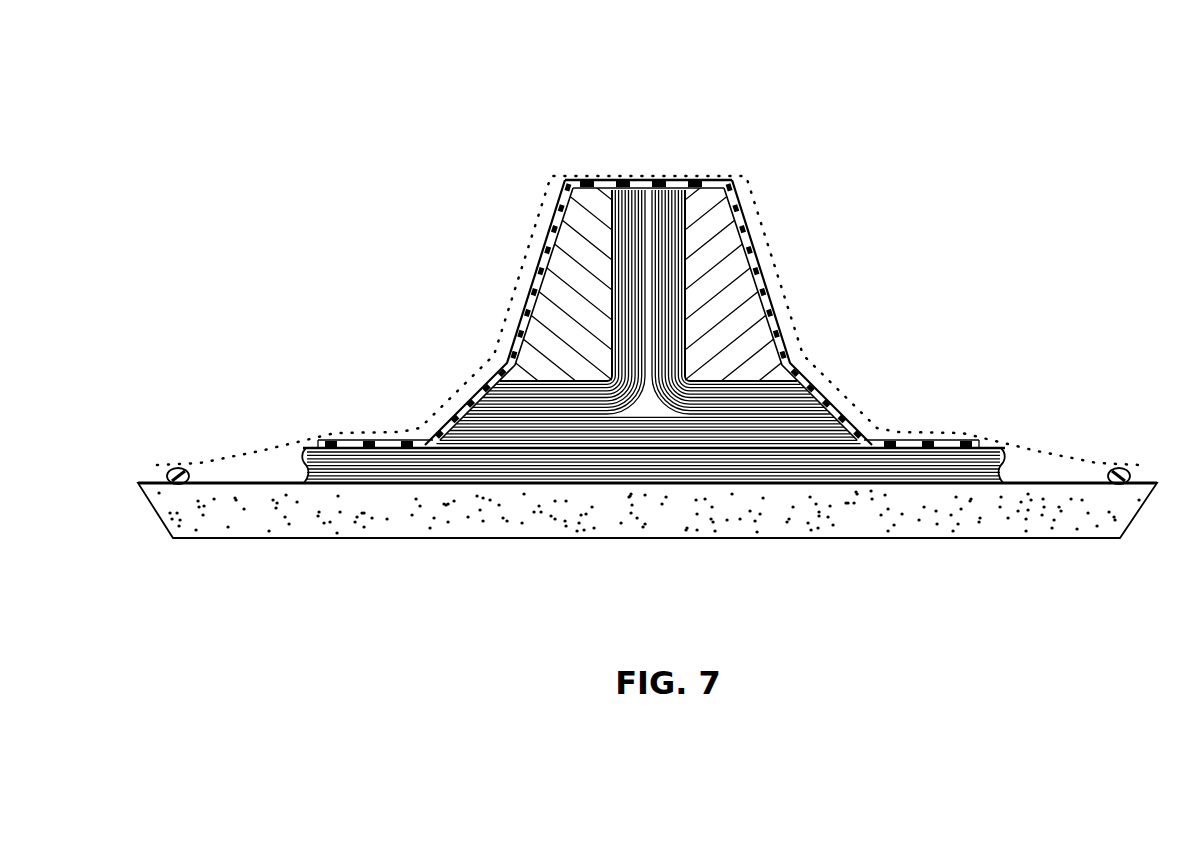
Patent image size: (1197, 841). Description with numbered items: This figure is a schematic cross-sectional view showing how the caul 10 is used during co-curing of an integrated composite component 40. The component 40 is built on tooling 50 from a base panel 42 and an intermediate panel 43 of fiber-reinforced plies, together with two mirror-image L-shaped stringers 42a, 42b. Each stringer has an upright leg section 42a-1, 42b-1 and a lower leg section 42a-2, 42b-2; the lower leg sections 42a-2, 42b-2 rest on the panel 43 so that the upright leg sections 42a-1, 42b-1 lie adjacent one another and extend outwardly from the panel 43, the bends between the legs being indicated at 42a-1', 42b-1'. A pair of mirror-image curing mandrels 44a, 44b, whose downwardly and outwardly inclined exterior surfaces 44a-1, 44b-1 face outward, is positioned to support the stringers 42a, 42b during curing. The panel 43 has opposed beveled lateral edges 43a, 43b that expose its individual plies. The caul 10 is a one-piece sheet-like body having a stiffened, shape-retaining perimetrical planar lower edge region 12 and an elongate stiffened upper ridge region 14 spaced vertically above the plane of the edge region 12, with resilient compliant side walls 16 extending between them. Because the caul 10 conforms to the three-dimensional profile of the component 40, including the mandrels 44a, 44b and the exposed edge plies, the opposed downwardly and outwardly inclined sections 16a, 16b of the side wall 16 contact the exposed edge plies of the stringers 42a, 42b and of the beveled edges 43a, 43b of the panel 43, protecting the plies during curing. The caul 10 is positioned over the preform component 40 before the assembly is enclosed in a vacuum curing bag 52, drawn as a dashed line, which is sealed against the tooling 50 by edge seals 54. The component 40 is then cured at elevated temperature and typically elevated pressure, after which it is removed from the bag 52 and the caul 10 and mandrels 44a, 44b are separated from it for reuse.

The caul 10 is at (752, 188).
The lower edge region 12 is at (622, 190).
The upper ridge region 14 is at (358, 442).
The side walls 16 is at (513, 285).
The inclined section of side wall 16a is at (415, 428).
The inclined section of side wall 16b is at (830, 378).
The integrated composite component 40 is at (740, 366).
The base panel 42 is at (800, 468).
The L-shaped stringer 42a is at (596, 240).
The upright leg section 42a-1 is at (629, 218).
The corner of first ply stack 42a-1' is at (401, 305).
The lower leg section 42a-2 is at (585, 403).
The L-shaped stringer 42b is at (743, 247).
The upright leg section 42b-1 is at (686, 245).
The corner of second ply stack 42b-1' is at (874, 336).
The lower leg section 42b-2 is at (737, 400).
The intermediate panel 43 is at (500, 430).
The beveled lateral edge 43a is at (402, 432).
The beveled lateral edge 43b is at (885, 412).
The curing mandrel 44a is at (545, 266).
The inclined exterior surface 44a-1 is at (537, 265).
The curing mandrel 44b is at (752, 266).
The inclined exterior surface 44b-1 is at (702, 255).
The tooling 50 is at (285, 527).
The vacuum curing bag 52 is at (424, 404).
The edge seals 54 is at (178, 466).